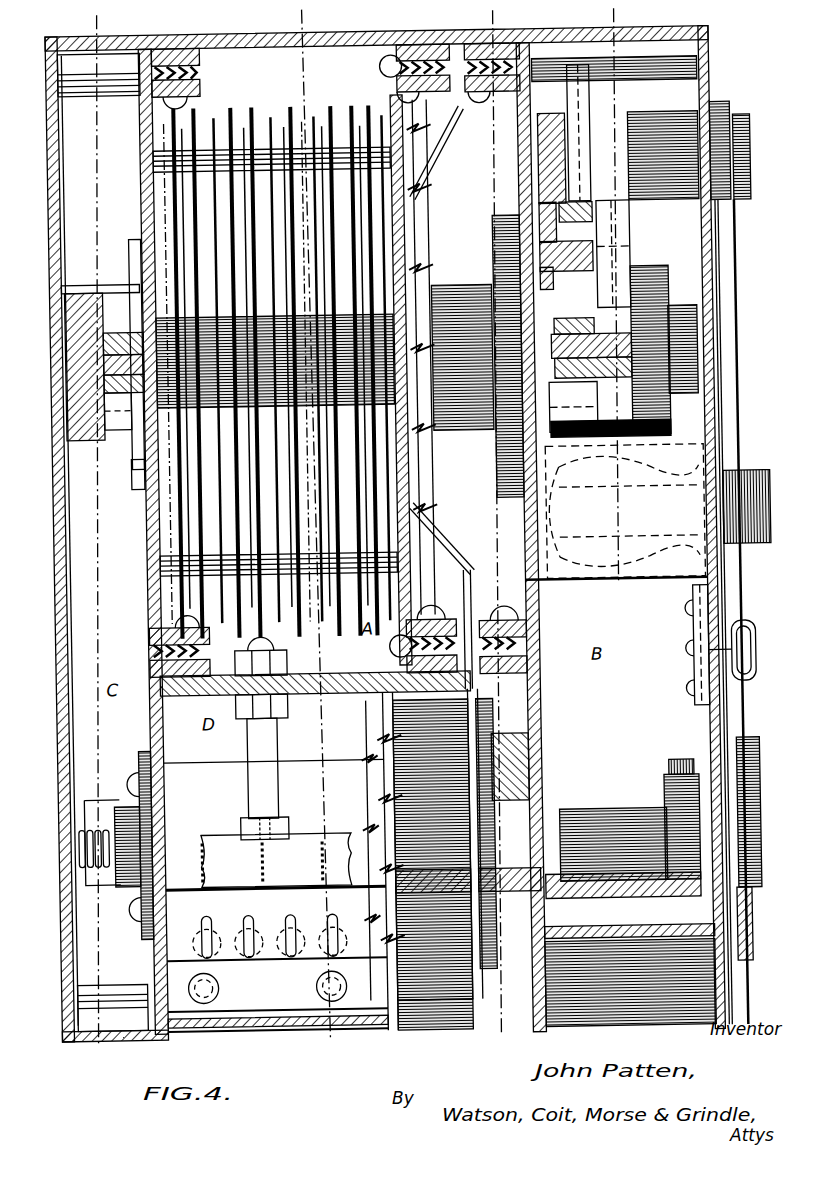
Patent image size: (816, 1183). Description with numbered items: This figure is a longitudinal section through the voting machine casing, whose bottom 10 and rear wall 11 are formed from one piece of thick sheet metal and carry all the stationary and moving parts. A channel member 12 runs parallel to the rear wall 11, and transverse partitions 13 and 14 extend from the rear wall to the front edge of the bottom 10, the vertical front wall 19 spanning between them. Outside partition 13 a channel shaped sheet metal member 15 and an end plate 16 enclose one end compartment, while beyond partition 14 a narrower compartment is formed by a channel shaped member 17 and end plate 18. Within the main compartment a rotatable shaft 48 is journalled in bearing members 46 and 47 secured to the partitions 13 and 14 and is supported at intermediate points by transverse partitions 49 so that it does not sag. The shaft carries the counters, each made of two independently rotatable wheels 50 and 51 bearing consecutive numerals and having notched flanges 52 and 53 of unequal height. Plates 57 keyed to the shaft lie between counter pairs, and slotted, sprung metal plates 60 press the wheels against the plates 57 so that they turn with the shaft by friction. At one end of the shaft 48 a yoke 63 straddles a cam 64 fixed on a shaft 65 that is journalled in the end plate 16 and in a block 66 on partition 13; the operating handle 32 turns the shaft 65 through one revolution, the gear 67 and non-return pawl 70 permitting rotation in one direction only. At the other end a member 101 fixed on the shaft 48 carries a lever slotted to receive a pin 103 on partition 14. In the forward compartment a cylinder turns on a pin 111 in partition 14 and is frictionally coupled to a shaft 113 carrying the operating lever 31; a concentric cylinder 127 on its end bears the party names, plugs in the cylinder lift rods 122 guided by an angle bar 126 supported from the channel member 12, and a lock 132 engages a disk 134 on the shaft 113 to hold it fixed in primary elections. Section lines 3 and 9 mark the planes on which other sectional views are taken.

The section line 3 is at (510, 12).
The section line 9 is at (606, 14).
The bottom 10 is at (330, 1040).
The rear wall 11 is at (100, 28).
The channel member 12 is at (326, 678).
The transverse partition 13 is at (544, 615).
The transverse partition 14 is at (147, 595).
The channel shaped sheet metal member 15 is at (612, 934).
The sheet metal plate 16 is at (716, 598).
The channel shaped sheet metal member 17 is at (122, 1030).
The end plate 18 is at (52, 642).
The vertical front wall 19 is at (288, 1028).
The operating lever 31 is at (739, 876).
The operating handle 32 is at (740, 354).
The bearing member 46 is at (472, 421).
The bearing member 47 is at (139, 437).
The rotatable shaft 48 is at (409, 302).
The transverse partitions 49 is at (406, 126).
The hundreds and thousands counter wheel 50 is at (254, 139).
The units and tens counter wheel 51 is at (322, 150).
The flange 52 is at (210, 142).
The flange 53 is at (305, 143).
The plates 57 is at (359, 119).
The metal plates 60 is at (274, 583).
The yoke 63 is at (633, 250).
The cam 64 is at (633, 115).
The shaft 65 is at (624, 224).
The block 66 is at (506, 200).
The gear 67 is at (537, 114).
The non-return pawl 70 is at (527, 180).
The member 101 is at (93, 289).
The pin 103 is at (119, 330).
The pin 111 is at (90, 827).
The shaft 113 is at (603, 822).
The rods 122 is at (282, 917).
The angle bar 126 is at (248, 960).
The second concentric cylinder 127 is at (410, 1000).
The lock 132 is at (688, 672).
The disk 134 is at (695, 745).